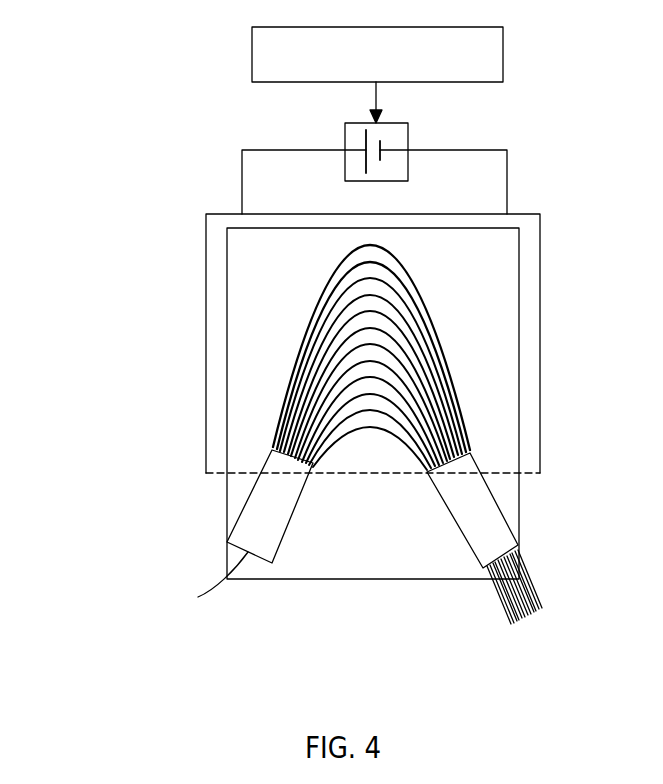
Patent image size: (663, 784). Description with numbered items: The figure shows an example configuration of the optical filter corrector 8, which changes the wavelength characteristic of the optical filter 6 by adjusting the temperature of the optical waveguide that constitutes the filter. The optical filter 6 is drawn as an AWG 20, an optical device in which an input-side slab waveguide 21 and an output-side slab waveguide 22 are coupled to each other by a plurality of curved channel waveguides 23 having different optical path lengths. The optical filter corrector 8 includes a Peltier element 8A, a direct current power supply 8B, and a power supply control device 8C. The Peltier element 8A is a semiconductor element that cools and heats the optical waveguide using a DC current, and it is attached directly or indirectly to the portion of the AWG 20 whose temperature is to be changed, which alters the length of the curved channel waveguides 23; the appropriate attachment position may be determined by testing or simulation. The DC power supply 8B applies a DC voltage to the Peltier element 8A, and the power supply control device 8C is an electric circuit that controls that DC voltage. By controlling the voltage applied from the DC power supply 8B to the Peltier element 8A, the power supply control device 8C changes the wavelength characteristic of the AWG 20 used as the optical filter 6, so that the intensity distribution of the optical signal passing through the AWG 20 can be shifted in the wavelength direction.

The optical filter 6 is at (227, 512).
The optical filter corrector 8 is at (100, 17).
The Peltier element 8A is at (206, 270).
The direct current (DC) power supply 8B is at (345, 138).
The power supply control device 8C is at (252, 55).
The AWG 20 is at (450, 632).
The input-side slab waveguide 21 is at (271, 527).
The output-side slab waveguide 22 is at (472, 535).
The curved channel waveguides 23 is at (370, 427).